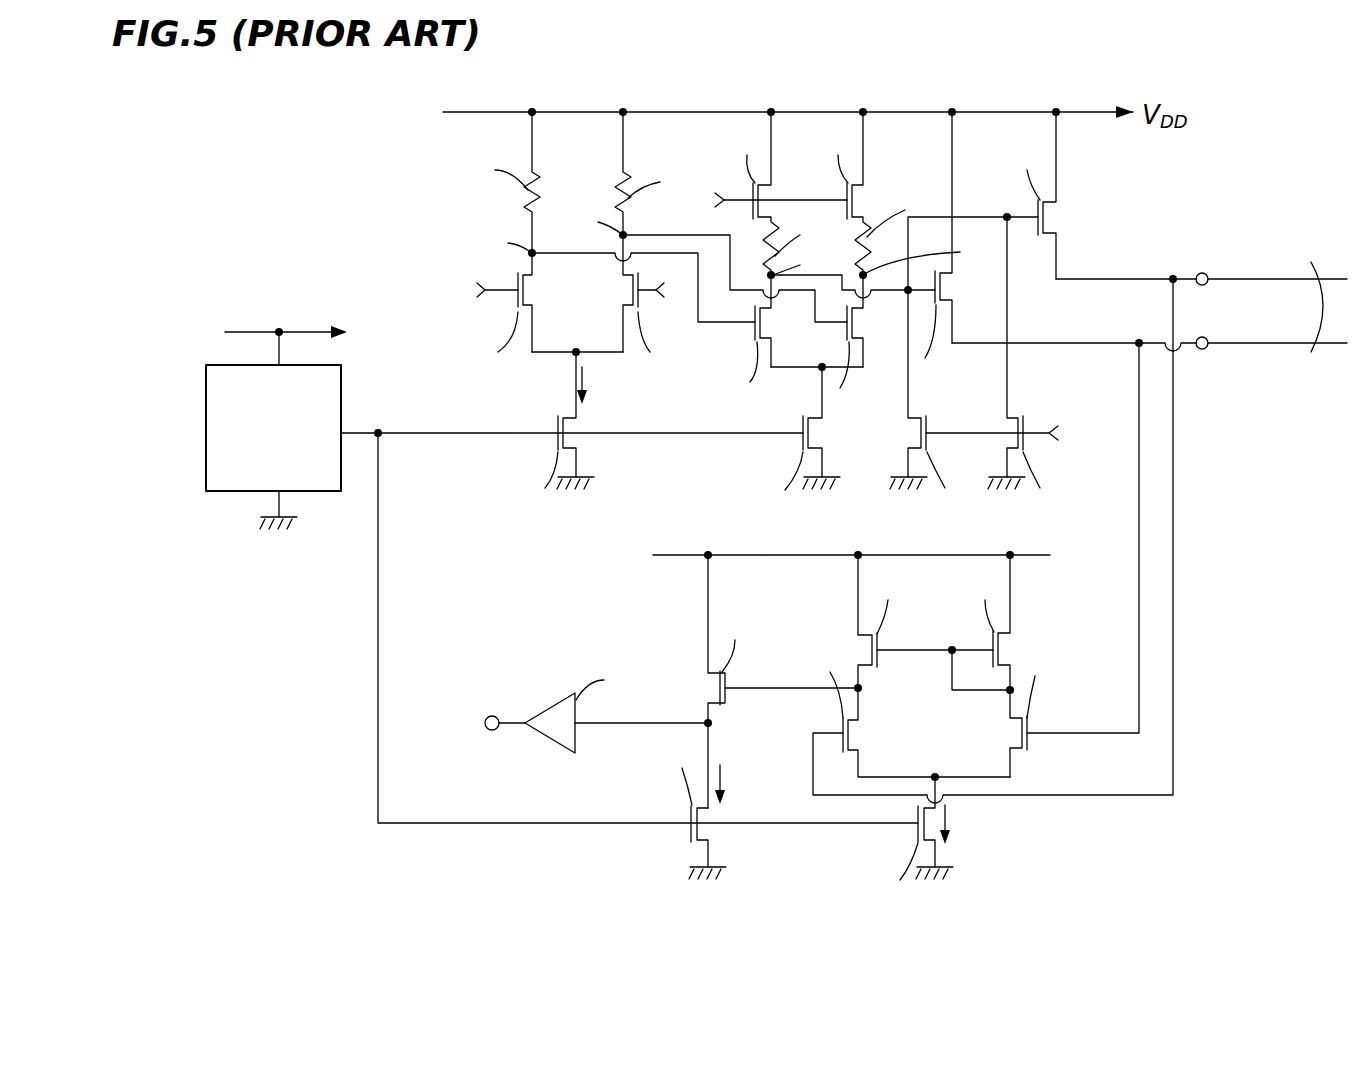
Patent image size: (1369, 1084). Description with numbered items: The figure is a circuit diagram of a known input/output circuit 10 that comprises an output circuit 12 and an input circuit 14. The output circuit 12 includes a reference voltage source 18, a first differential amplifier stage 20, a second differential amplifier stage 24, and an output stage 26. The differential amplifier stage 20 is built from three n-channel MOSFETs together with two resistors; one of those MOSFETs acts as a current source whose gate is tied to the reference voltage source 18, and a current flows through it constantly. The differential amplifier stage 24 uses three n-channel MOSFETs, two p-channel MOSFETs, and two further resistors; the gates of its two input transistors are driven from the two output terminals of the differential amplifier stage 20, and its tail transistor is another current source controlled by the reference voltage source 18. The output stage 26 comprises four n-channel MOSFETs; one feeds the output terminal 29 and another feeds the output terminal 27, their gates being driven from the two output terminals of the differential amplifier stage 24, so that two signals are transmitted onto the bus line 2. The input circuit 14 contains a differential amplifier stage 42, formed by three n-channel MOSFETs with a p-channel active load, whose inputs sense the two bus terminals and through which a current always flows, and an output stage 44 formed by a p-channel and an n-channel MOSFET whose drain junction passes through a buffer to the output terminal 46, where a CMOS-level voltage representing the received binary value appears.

The bus line 2 is at (1318, 262).
The input/output circuit 10 is at (340, 630).
The output circuit 12 is at (470, 202).
The input circuit 14 is at (640, 601).
The reference voltage source 18 is at (206, 422).
The differential amplifier stage 20 is at (522, 374).
The differential amplifier stage 24 is at (782, 444).
The output stage 26 is at (1030, 362).
The output terminal 27 is at (1204, 273).
The output terminal 29 is at (1203, 349).
The differential amplifier stage 42 is at (1024, 826).
The output stage 44 is at (672, 856).
The output terminal 46 is at (492, 730).